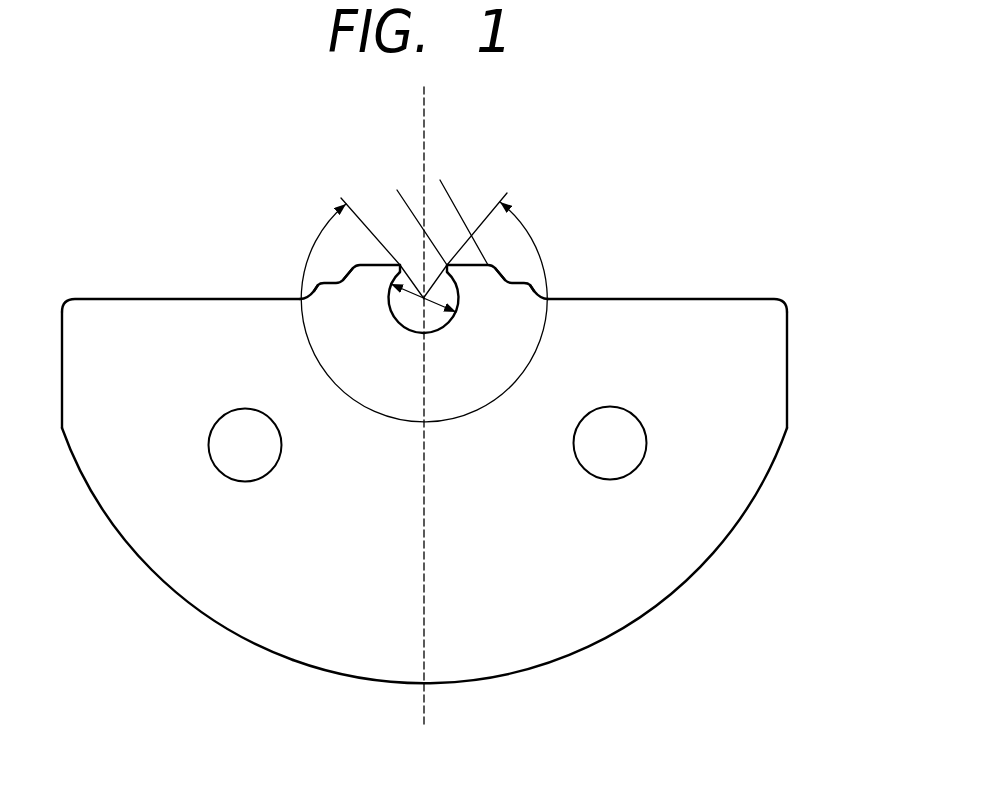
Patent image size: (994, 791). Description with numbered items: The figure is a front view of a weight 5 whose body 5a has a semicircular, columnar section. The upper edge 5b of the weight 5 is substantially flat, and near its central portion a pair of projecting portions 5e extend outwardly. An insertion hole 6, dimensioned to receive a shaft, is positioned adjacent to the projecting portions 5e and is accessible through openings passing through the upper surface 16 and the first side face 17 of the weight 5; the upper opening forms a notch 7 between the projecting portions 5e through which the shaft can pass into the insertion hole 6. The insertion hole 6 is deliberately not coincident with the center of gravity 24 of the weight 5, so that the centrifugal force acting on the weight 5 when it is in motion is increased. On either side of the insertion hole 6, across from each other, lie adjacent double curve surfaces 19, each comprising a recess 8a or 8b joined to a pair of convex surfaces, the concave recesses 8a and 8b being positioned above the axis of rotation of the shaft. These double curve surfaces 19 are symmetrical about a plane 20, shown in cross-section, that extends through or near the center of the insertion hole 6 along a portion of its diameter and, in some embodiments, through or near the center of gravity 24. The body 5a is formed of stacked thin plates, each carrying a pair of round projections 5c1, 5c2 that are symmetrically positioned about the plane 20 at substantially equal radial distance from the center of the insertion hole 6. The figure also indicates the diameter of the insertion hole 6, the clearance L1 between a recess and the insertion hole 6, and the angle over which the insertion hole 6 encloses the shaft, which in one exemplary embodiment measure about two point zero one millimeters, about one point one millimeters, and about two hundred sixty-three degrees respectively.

The weight 5 is at (465, 414).
The body 5a is at (732, 488).
The upper edge 5b is at (697, 297).
The projection 5c1 is at (237, 465).
The projection 5c2 is at (610, 463).
The projecting portions 5e is at (370, 267).
The insertion hole 6 is at (393, 317).
The notch 7 is at (348, 257).
The recess 8a is at (524, 272).
The recess 8b is at (328, 273).
The upper surface 16 is at (159, 292).
The first side face 17 is at (148, 492).
The double curve surfaces 19 is at (329, 262).
The plane 20 is at (424, 106).
The center of gravity 24 is at (426, 467).
The clearance L1 is at (370, 237).